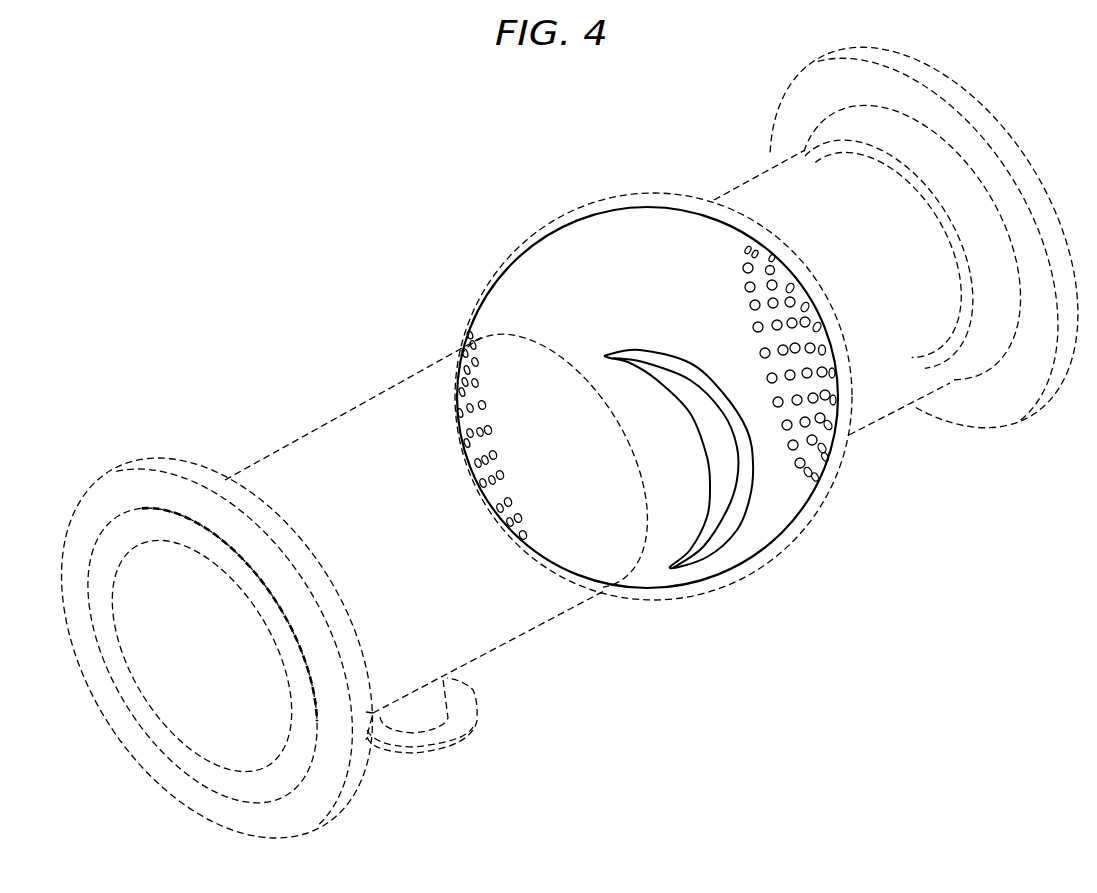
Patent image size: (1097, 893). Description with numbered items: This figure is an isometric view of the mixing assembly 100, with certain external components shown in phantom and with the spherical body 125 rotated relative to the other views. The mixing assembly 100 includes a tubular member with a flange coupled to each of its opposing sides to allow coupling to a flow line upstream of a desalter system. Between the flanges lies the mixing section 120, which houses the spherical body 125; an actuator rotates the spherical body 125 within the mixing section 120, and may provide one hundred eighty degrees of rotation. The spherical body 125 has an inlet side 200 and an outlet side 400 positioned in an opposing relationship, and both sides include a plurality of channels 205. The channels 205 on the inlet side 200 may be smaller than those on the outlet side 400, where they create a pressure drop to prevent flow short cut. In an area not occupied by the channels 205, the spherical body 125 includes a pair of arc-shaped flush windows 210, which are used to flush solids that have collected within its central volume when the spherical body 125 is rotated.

The mixing assembly 100 is at (493, 203).
The mixing section 120 is at (624, 178).
The spherical body 125 is at (698, 597).
The inlet side 200 is at (497, 540).
The channels 205 is at (487, 406).
The flush windows 210 is at (730, 517).
The outlet side 400 is at (840, 440).